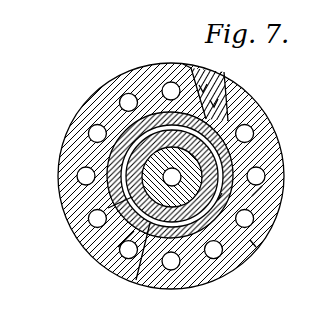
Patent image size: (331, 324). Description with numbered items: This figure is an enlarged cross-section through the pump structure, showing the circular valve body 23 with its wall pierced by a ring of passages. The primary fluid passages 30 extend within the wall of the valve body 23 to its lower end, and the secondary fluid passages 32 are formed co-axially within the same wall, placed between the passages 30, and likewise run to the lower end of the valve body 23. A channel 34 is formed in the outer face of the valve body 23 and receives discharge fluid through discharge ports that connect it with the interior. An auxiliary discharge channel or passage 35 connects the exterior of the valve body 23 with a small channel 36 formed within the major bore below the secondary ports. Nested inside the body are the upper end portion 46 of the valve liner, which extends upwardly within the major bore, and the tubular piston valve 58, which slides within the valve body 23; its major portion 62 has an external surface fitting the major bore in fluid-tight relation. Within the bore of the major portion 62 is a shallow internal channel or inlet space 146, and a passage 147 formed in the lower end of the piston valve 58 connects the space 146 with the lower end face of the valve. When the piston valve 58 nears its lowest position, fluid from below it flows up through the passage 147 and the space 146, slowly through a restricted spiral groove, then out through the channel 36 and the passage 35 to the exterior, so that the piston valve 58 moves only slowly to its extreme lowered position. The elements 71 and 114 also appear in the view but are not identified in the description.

The valve body 23 is at (252, 196).
The primary fluid passages 30 is at (119, 98).
The secondary fluid passages 32 is at (170, 80).
The channel 34 is at (184, 66).
The auxiliary discharge channel 35 is at (236, 99).
The small channel 36 is at (256, 247).
The upper end portion 46 is at (121, 130).
The piston valve 58 is at (215, 130).
The major portion 62 is at (126, 170).
The flange section 71 is at (118, 247).
The central bore 114 is at (163, 177).
The inlet space 146 is at (108, 208).
The passage 147 is at (222, 193).